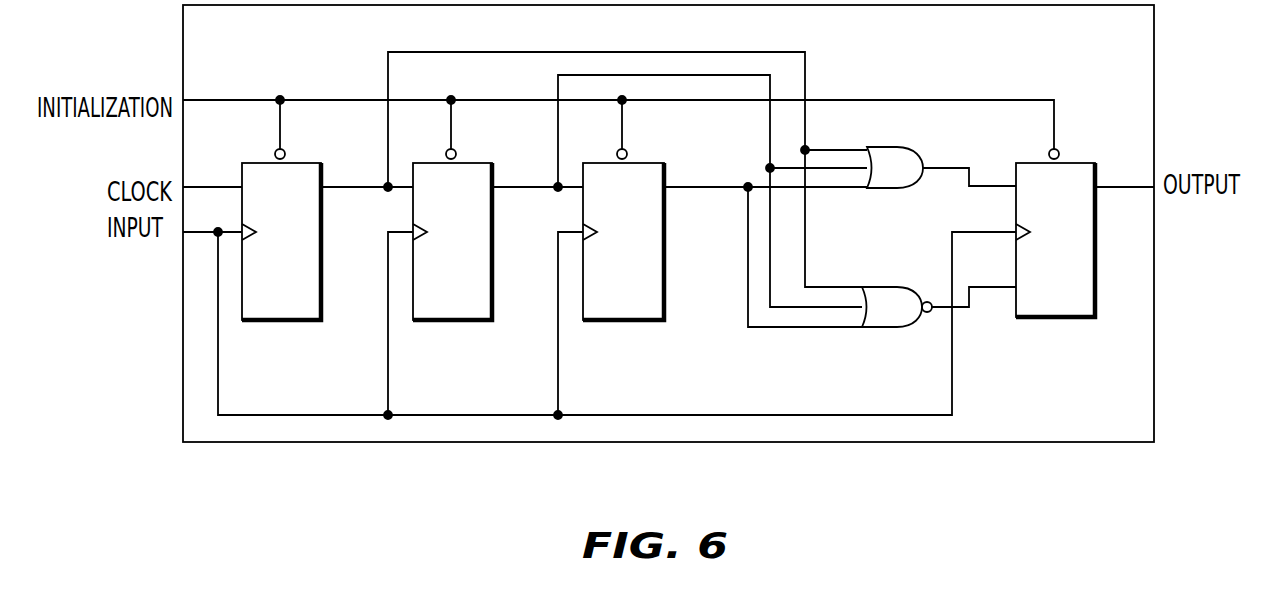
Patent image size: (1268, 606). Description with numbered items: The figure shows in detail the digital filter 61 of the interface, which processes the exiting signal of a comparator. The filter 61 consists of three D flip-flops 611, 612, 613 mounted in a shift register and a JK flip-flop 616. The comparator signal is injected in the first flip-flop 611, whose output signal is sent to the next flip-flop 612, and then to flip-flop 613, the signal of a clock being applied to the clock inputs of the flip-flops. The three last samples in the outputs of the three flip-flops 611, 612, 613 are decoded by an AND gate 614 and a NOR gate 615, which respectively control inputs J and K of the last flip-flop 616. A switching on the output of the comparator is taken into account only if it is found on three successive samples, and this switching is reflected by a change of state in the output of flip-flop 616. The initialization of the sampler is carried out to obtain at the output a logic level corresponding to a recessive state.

The digital filter 61 is at (982, 442).
The first D flip-flop 611 is at (298, 320).
The second D flip-flop 612 is at (468, 320).
The third D flip-flop 613 is at (638, 320).
The AND gate 614 is at (886, 188).
The NOR gate 615 is at (875, 327).
The JK flip-flop 616 is at (1065, 317).